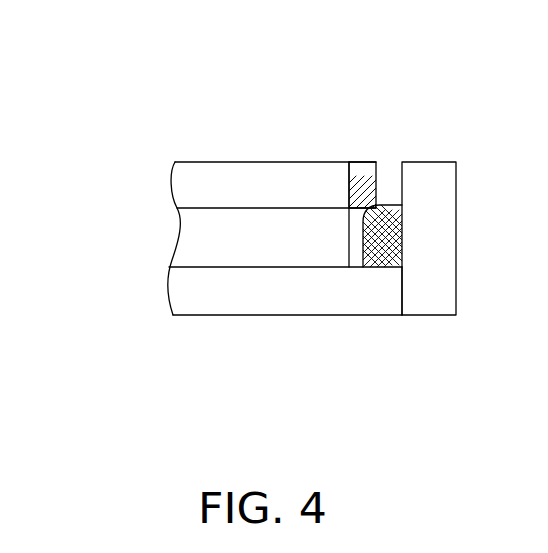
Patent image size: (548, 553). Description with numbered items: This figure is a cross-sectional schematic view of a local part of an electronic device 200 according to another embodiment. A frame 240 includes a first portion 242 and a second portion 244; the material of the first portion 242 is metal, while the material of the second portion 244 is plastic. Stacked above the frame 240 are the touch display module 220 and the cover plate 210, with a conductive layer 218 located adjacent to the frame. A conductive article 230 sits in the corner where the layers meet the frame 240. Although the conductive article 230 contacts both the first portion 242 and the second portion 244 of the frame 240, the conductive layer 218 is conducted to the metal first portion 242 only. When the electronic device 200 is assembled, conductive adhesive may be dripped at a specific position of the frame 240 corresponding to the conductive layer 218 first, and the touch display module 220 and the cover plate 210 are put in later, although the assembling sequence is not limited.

The electronic device 200 is at (212, 110).
The cover plate 210 is at (275, 160).
The conductive layer 218 is at (365, 170).
The touch display module 220 is at (177, 232).
The conductive article 230 is at (387, 207).
The frame 240 is at (465, 398).
The first portion 242 is at (367, 297).
The second portion 244 is at (437, 297).